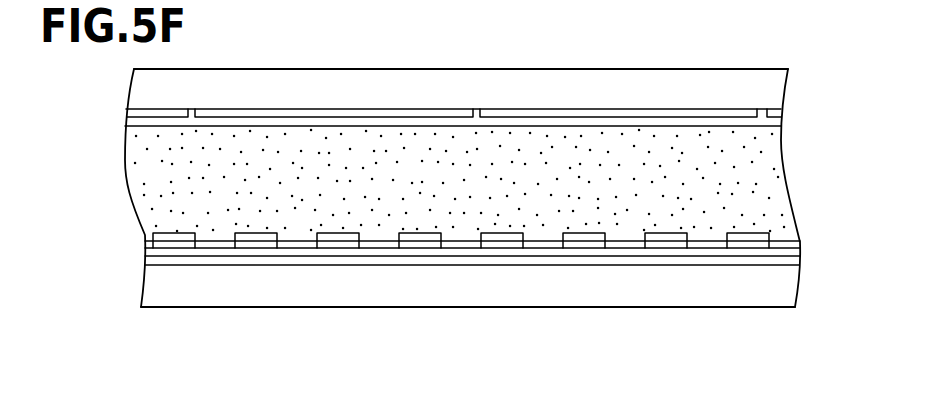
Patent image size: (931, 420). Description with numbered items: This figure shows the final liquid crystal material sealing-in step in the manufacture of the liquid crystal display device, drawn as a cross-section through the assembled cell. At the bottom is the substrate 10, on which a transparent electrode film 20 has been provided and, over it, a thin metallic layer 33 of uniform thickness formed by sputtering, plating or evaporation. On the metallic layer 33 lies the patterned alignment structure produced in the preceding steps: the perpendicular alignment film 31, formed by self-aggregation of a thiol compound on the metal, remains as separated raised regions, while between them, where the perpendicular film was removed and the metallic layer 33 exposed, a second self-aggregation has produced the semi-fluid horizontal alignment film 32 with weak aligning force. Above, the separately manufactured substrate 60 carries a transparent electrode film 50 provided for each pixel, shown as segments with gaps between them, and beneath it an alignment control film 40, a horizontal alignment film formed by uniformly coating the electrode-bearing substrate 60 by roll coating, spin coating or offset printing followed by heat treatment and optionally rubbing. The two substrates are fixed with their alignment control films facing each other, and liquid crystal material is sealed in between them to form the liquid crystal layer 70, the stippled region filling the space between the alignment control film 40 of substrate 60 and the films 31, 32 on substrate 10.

The substrate 10 is at (777, 285).
The transparent electrode film 20 is at (773, 262).
The perpendicular alignment film 31 is at (587, 243).
The horizontal alignment film 32 is at (618, 243).
The metallic layer 33 is at (773, 250).
The alignment control film 40 is at (752, 122).
The transparent electrode film 50 is at (767, 114).
The substrate 60 is at (762, 90).
The liquid crystal layer 70 is at (753, 180).